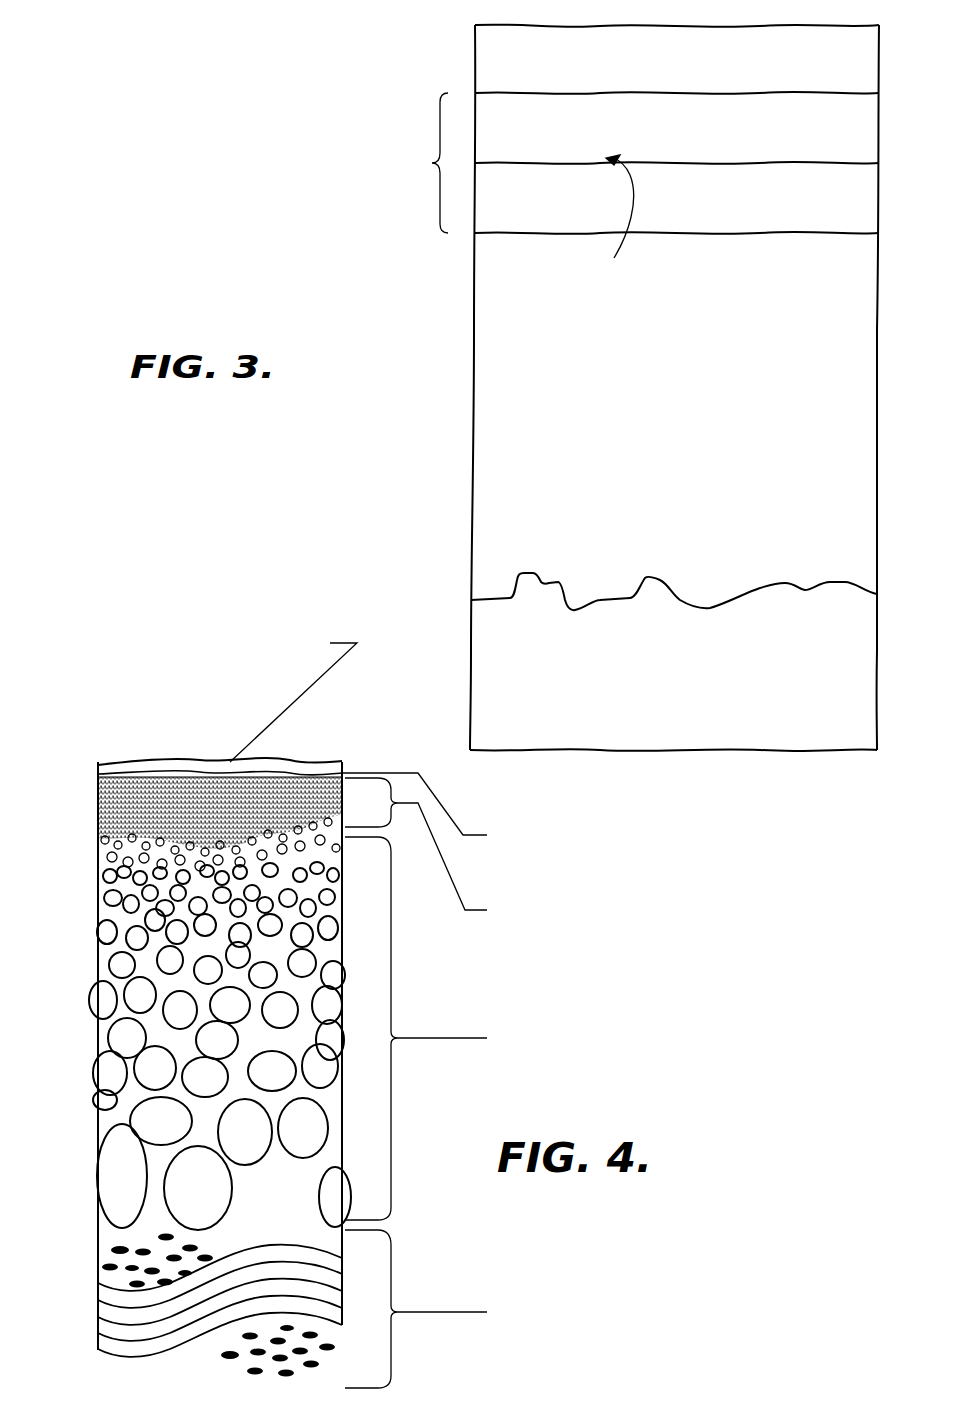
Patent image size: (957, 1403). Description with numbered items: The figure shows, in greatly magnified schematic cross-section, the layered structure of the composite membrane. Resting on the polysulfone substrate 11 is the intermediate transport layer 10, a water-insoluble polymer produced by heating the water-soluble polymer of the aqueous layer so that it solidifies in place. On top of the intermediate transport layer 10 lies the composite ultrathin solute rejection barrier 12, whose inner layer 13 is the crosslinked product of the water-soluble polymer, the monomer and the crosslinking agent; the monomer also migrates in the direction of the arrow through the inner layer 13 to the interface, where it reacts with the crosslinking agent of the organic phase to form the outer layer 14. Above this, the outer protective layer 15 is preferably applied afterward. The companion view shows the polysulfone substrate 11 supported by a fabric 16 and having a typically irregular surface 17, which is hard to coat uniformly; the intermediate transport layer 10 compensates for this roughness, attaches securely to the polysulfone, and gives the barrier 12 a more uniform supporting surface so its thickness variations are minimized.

In FIG. 3, the intermediate transport layer 10 is at (857, 383).
In FIG. 4, the intermediate transport layer 10 is at (118, 813).
In FIG. 3, the polysulfone substrate 11 is at (857, 655).
In FIG. 4, the polysulfone substrate 11 is at (100, 1050).
In FIG. 3, the composite ultrathin solute rejection barrier 12 is at (258, 231).
In FIG. 4, the composite ultrathin solute rejection barrier 12 is at (122, 777).
In FIG. 3, the inner layer 13 is at (855, 218).
In FIG. 3, the outer layer 14 is at (862, 138).
In FIG. 3, the outer protective layer 15 is at (870, 76).
In FIG. 4, the outer protective layer 15 is at (125, 765).
In FIG. 4, the fabric 16 is at (113, 1332).
In FIG. 4, the irregular surface 17 is at (90, 946).